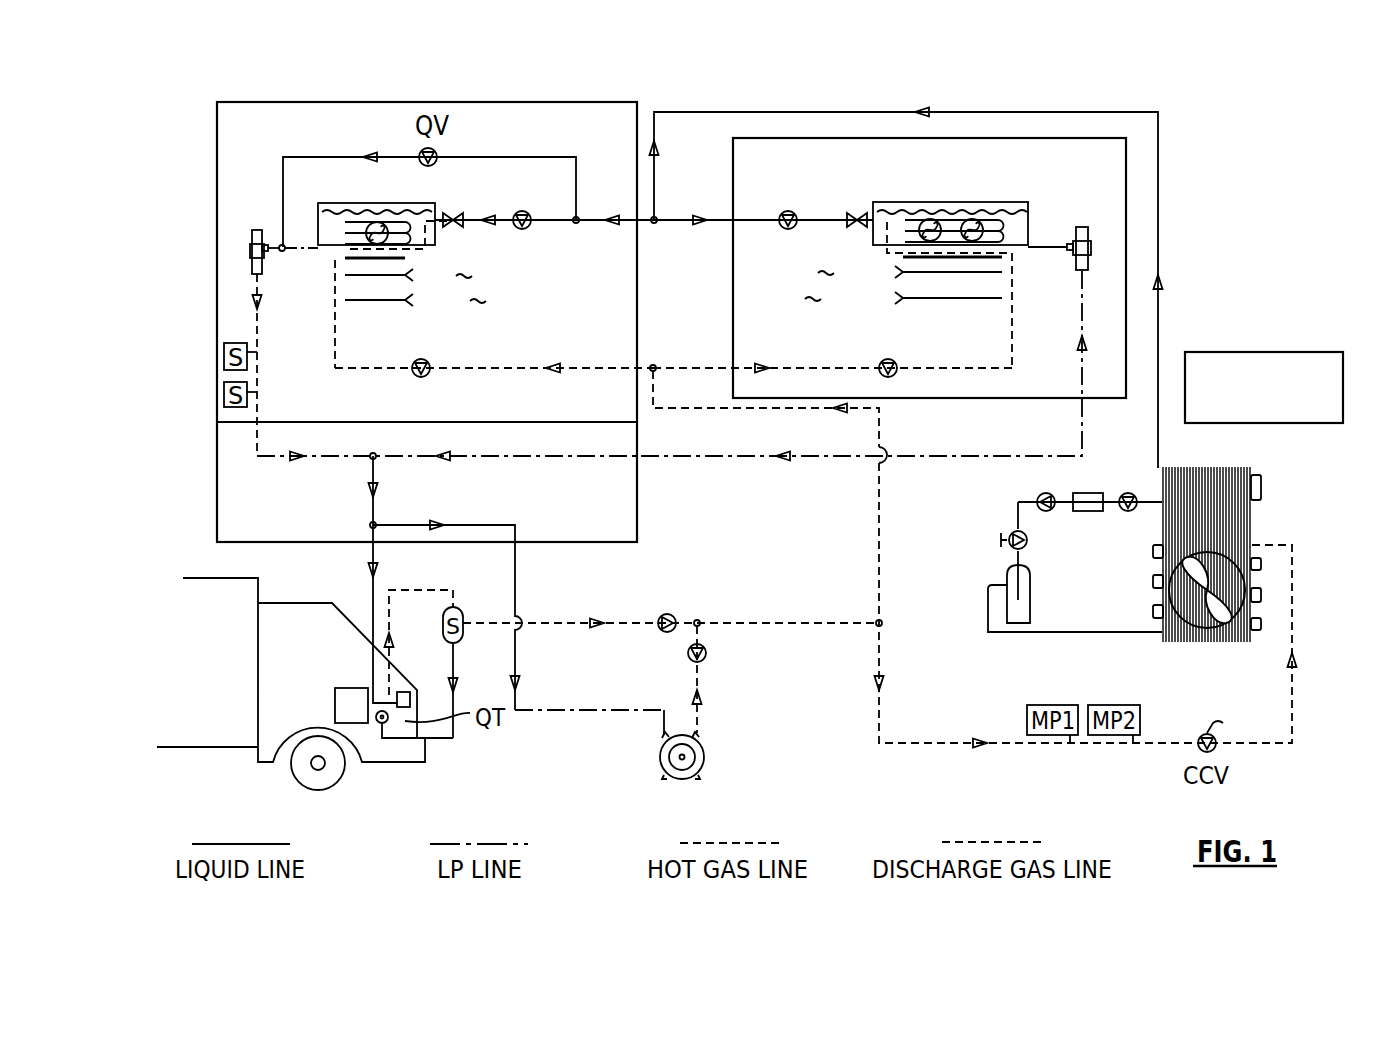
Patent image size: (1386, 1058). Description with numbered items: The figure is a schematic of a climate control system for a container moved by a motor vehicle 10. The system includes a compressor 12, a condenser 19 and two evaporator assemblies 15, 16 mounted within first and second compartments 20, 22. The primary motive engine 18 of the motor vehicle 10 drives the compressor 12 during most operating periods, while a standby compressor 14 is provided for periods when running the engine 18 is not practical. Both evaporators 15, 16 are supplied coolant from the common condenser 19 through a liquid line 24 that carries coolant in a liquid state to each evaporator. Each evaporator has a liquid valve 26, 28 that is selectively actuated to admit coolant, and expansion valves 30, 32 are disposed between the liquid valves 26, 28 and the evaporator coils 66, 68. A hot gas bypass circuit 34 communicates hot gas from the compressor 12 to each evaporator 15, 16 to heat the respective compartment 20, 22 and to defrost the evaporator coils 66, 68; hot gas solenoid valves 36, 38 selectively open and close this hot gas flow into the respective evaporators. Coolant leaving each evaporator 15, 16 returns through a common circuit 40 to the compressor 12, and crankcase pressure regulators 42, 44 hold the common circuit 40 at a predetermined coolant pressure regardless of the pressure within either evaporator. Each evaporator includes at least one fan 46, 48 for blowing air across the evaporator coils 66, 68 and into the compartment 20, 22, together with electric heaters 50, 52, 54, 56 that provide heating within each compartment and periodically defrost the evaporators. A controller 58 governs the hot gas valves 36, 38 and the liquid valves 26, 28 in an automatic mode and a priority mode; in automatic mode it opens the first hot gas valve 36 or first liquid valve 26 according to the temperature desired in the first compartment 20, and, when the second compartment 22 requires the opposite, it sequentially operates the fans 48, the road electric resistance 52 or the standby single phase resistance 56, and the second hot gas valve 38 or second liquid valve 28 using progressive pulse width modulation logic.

The motor vehicle 10 is at (275, 716).
The compressor 12 is at (383, 725).
The standby compressor 14 is at (683, 766).
The first evaporator assembly 15 is at (336, 266).
The second evaporator assembly 16 is at (1018, 258).
The primary motive engine 18 is at (350, 697).
The condenser 19 is at (1228, 528).
The first compartment 20 is at (598, 121).
The second compartment 22 is at (762, 163).
The liquid line 24 is at (1160, 234).
The first liquid valve 26 is at (532, 227).
The second liquid valve 28 is at (788, 211).
The first expansion valve 30 is at (462, 214).
The second expansion valve 32 is at (858, 213).
The hot gas bypass circuit 34 is at (878, 513).
The first hot gas solenoid valve 36 is at (421, 358).
The second hot gas solenoid valve 38 is at (895, 375).
The common circuit 40 is at (665, 459).
The first crankcase pressure regulator 42 is at (257, 230).
The second crankcase pressure regulator 44 is at (1087, 262).
The first evaporator fan 46 is at (372, 223).
The second evaporator fan 48 is at (972, 222).
The electric heater 50 is at (540, 275).
The road electric resistance heater 52 is at (811, 275).
The electric heater 54 is at (553, 301).
The standby single phase resistance heater 56 is at (785, 312).
The controller 58 is at (1282, 417).
The first evaporator coil 66 is at (430, 213).
The second evaporator coil 68 is at (1005, 206).